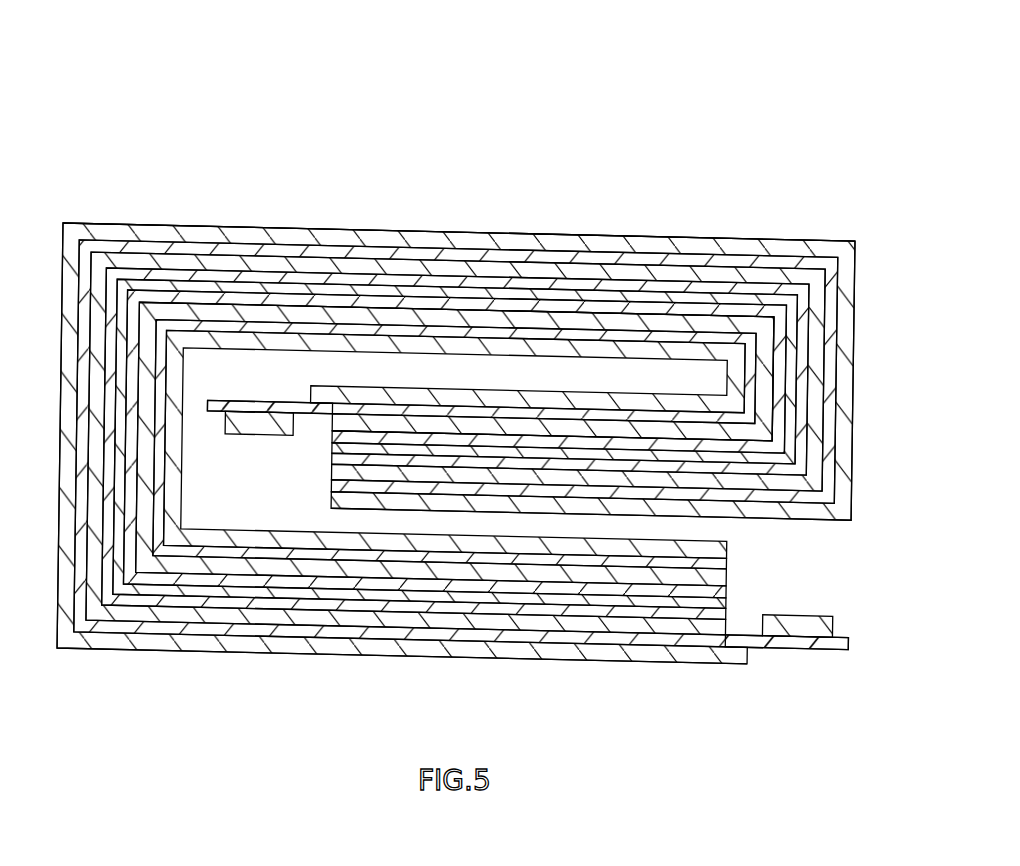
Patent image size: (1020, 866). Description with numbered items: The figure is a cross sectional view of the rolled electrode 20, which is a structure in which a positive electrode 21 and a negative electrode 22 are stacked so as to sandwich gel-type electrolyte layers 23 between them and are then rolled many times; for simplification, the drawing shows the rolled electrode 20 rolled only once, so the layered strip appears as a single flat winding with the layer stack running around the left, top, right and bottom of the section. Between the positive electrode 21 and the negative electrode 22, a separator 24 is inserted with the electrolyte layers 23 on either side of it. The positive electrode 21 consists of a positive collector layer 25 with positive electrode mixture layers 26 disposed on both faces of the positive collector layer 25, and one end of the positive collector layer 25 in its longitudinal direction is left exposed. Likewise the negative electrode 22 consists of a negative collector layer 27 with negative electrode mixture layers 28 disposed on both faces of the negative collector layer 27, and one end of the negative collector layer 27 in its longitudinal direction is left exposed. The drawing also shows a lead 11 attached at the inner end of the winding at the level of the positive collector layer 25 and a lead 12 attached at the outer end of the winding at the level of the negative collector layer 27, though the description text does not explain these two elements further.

The rolled electrode 20 is at (789, 64).
The positive electrode lead 11 is at (249, 412).
The negative electrode lead 12 is at (808, 633).
The positive electrode 21 is at (567, 184).
The negative electrode 22 is at (777, 193).
The gel-type electrolyte layers 23 is at (338, 303).
The separator 24 is at (162, 285).
The positive collector layer 25 is at (423, 332).
The positive electrode mixture layers 26 is at (578, 343).
The negative collector layer 27 is at (653, 257).
The negative electrode mixture layers 28 is at (765, 272).